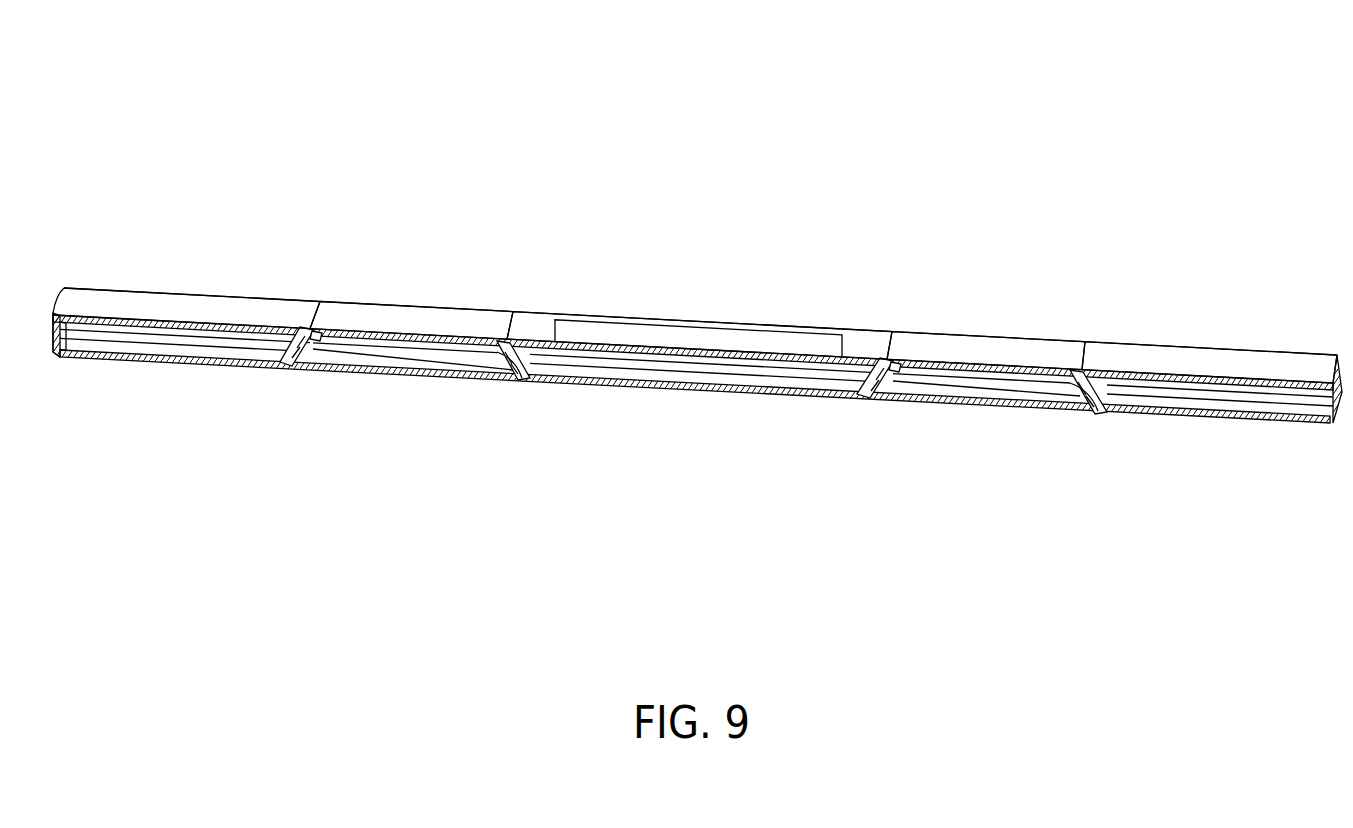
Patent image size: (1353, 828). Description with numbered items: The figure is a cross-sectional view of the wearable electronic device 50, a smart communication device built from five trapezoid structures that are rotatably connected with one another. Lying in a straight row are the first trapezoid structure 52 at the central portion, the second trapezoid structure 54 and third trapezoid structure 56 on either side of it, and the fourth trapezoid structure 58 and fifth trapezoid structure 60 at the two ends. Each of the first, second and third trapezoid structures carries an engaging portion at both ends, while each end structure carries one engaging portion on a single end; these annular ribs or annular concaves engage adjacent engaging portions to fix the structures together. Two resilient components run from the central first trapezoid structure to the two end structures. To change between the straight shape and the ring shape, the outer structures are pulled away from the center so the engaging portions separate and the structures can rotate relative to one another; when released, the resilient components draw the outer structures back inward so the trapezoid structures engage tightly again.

The wearable electronic device 50 is at (1013, 117).
The first trapezoid structure 52 is at (737, 299).
The second trapezoid structure 54 is at (435, 281).
The third trapezoid structure 56 is at (1008, 314).
The fourth trapezoid structure 58 is at (223, 271).
The fifth trapezoid structure 60 is at (1220, 324).